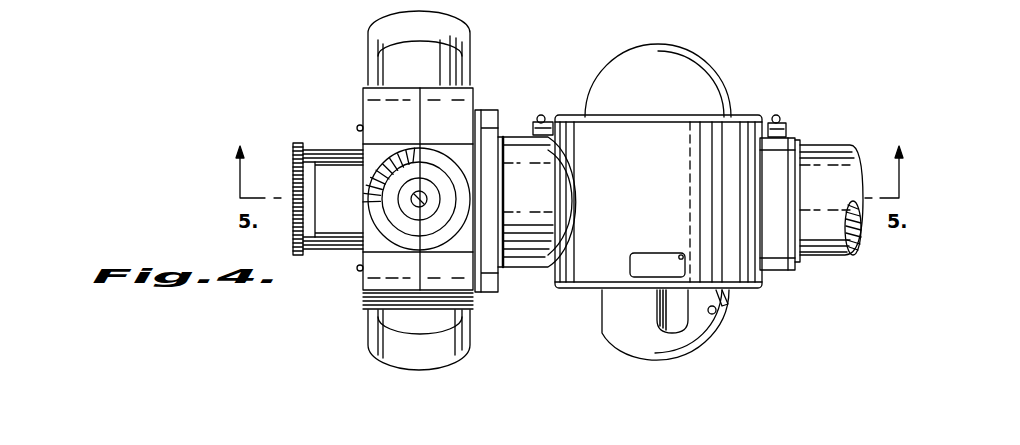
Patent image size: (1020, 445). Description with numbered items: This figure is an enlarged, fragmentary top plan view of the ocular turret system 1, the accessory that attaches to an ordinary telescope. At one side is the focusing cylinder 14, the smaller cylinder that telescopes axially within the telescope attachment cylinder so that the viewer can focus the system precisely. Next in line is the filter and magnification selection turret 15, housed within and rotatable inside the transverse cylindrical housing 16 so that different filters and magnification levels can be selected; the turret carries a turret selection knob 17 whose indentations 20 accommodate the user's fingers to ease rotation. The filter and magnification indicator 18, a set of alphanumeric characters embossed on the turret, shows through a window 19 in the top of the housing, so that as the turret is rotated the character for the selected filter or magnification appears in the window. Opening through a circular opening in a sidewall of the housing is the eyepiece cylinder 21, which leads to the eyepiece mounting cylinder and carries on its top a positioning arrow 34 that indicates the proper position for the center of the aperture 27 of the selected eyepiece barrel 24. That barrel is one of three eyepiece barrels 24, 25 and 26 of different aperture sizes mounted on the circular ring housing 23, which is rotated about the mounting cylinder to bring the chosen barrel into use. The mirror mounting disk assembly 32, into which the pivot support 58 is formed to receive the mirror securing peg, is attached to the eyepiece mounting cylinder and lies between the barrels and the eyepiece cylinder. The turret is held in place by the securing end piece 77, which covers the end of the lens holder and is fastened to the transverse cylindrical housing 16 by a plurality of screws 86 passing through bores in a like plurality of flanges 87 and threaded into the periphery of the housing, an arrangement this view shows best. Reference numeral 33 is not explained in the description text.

The ocular turret system 1 is at (279, 304).
The focusing cylinder 14 is at (842, 258).
The filter and magnification selection turret 15 is at (682, 56).
The transverse cylindrical housing 16 is at (578, 290).
The turret selection knob 17 is at (660, 362).
The filter and magnification indicator 18 is at (630, 267).
The window 19 is at (680, 254).
The indentations 20 is at (716, 309).
The eyepiece cylinder 21 is at (543, 272).
The circular ring housing 23 is at (352, 256).
The eyepiece barrel 24 is at (404, 156).
The eyepiece barrel 25 is at (466, 30).
The eyepiece barrel 26 is at (367, 348).
The aperture 27 is at (420, 194).
The mirror mounting disk assembly 32 is at (362, 116).
The knob 33 is at (292, 152).
The positioning arrow 34 is at (505, 199).
The pivot support 58 is at (336, 164).
The securing end piece 77 is at (632, 58).
The screws 86 is at (541, 116).
The flanges 87 is at (790, 124).